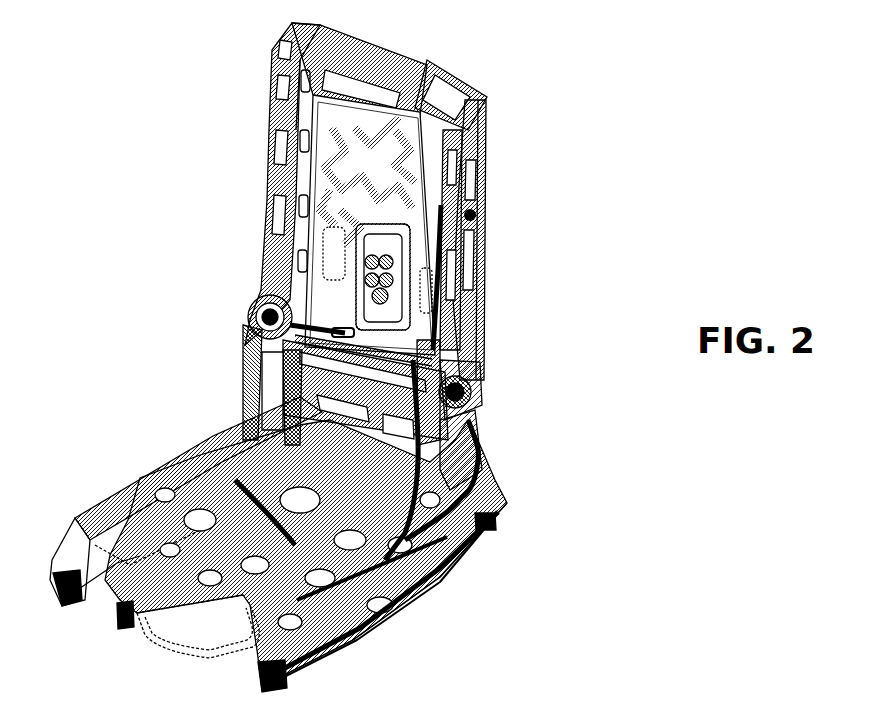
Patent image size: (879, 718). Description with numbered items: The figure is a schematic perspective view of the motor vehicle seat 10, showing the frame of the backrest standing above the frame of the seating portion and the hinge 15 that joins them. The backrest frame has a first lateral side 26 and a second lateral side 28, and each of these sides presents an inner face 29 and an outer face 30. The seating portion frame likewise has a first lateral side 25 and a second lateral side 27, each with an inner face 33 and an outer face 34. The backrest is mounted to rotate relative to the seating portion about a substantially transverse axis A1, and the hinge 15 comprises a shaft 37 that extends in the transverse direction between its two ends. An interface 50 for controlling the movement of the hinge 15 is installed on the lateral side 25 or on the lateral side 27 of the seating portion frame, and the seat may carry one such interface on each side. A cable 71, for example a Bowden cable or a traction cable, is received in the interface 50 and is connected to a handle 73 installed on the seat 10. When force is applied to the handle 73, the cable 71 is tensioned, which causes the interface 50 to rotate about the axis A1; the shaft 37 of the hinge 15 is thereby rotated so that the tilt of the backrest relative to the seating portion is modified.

The seat 10 is at (210, 83).
The hinge 15 is at (473, 387).
The first lateral side 25 is at (353, 639).
The first lateral side 26 is at (483, 247).
The second lateral side 27 is at (85, 527).
The second lateral side 28 is at (273, 203).
The inner face 29 is at (268, 247).
The outer face 30 is at (483, 322).
The inner face 33 is at (170, 498).
The outer face 34 is at (427, 580).
The shaft 37 is at (262, 355).
The interface 50 is at (483, 370).
The cable 71 is at (445, 460).
The handle 73 is at (370, 622).
The transverse axis A1 is at (483, 398).